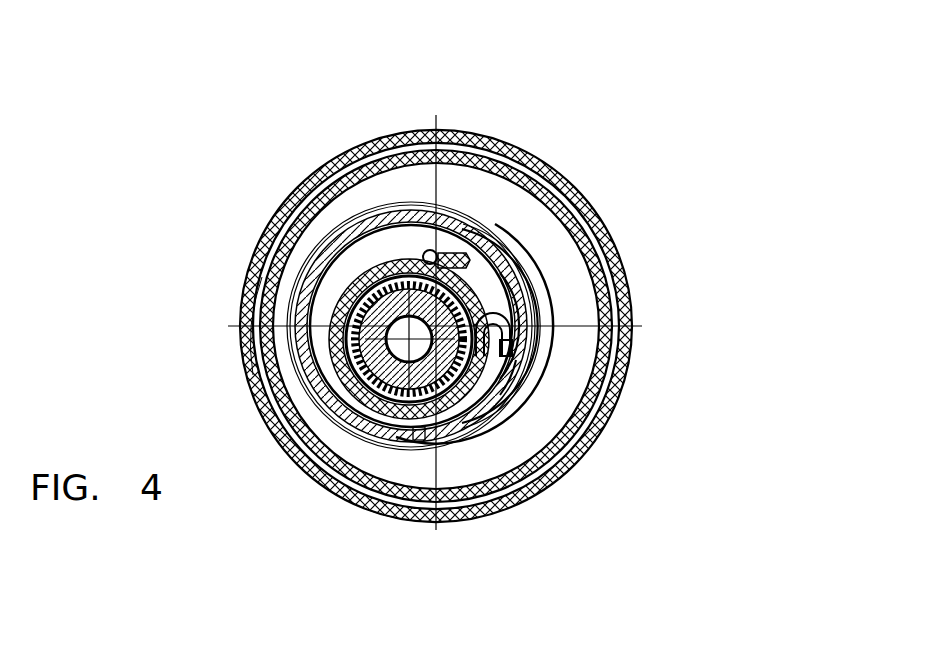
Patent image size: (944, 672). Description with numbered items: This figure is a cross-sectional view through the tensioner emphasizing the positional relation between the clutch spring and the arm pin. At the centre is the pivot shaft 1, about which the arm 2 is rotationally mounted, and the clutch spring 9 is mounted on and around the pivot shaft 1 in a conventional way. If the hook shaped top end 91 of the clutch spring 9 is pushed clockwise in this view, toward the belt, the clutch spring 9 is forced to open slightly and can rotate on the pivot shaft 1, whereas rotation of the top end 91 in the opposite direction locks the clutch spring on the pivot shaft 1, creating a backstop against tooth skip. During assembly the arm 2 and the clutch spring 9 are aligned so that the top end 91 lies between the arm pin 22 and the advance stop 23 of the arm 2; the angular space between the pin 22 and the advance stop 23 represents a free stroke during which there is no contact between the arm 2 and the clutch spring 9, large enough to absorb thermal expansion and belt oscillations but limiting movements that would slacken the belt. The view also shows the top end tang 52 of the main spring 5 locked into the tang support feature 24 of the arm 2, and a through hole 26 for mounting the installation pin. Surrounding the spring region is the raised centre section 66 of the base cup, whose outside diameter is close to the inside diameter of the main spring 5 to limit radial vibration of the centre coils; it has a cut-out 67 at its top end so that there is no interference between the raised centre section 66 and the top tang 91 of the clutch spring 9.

The pivot shaft 1 is at (348, 285).
The arm 2 is at (257, 235).
The main spring 5 is at (520, 333).
The clutch spring 9 is at (487, 297).
The pin 22 is at (513, 397).
The advance stop 23 is at (467, 252).
The tang support feature 24 is at (337, 495).
The through hole 26 is at (433, 250).
The top end tang 52 is at (440, 455).
The raised centre section 66 is at (247, 375).
The cut-out 67 is at (522, 367).
The hook shaped top end 91 is at (522, 312).